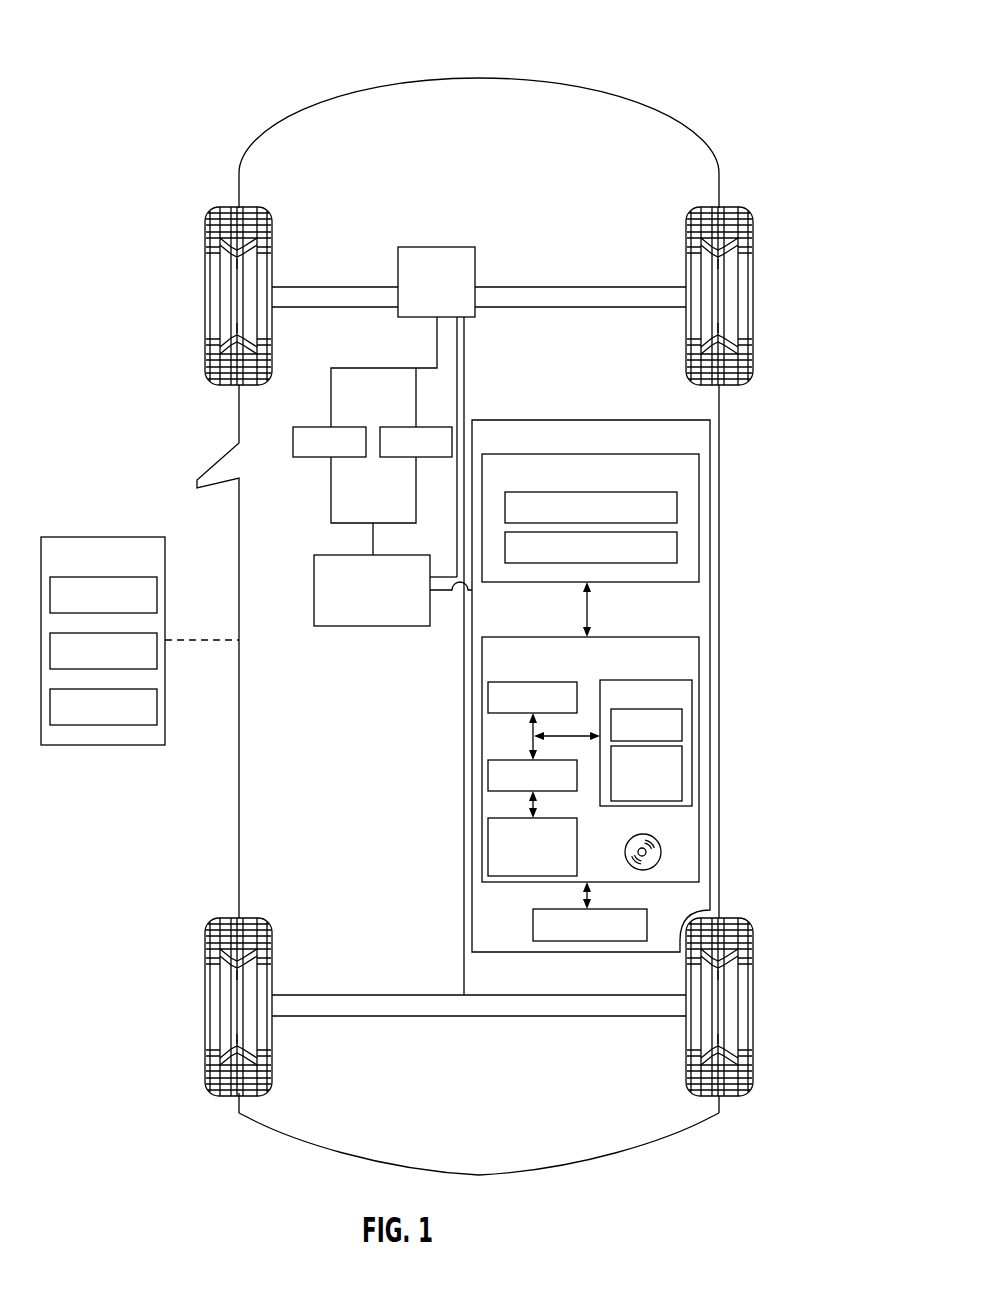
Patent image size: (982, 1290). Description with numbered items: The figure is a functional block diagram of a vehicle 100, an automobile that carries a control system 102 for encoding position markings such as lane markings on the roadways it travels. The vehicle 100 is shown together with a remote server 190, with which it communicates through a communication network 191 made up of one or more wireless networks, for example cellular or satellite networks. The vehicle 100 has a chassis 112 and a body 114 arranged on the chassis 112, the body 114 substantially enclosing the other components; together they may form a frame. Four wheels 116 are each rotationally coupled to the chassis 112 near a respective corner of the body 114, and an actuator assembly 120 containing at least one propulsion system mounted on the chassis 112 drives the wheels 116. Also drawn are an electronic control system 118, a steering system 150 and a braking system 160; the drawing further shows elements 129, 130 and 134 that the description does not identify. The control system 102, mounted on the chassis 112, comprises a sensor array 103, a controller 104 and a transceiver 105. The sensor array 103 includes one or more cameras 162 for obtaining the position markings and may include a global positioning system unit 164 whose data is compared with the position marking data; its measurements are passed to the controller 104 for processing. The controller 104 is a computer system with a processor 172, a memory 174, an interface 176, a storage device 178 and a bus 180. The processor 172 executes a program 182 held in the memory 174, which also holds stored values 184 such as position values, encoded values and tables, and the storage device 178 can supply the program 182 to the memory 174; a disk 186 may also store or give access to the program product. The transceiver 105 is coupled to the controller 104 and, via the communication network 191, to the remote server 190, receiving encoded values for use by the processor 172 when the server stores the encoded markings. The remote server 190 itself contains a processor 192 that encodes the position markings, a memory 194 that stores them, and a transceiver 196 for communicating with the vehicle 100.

The vehicle 100 is at (218, 42).
The control system 102 is at (710, 425).
The sensor array 103 is at (699, 460).
The controller 104 is at (699, 645).
The transceiver 105 is at (540, 941).
The chassis 112 is at (462, 946).
The body 114 is at (239, 798).
The wheels 116 is at (206, 233).
The electronic control system 118 is at (355, 627).
The actuator assembly 120 is at (481, 327).
The motor housing 129 is at (441, 247).
The electric motor 130 is at (456, 293).
The axle 134 is at (350, 287).
The steering system 150 is at (324, 459).
The braking system 160 is at (402, 459).
The cameras 162 is at (678, 542).
The global positioning system (GPS) unit 164 is at (678, 502).
The processor 172 is at (488, 689).
The memory 174 is at (692, 685).
The interface 176 is at (488, 785).
The storage device 178 is at (488, 868).
The bus 180 is at (530, 740).
The program 182 is at (683, 733).
The stored values 184 is at (683, 795).
The disk 186 is at (662, 858).
The remote server 190 is at (125, 537).
The communication network 191 is at (213, 641).
The processor 192 is at (157, 579).
The memory 194 is at (157, 636).
The transceiver 196 is at (157, 718).